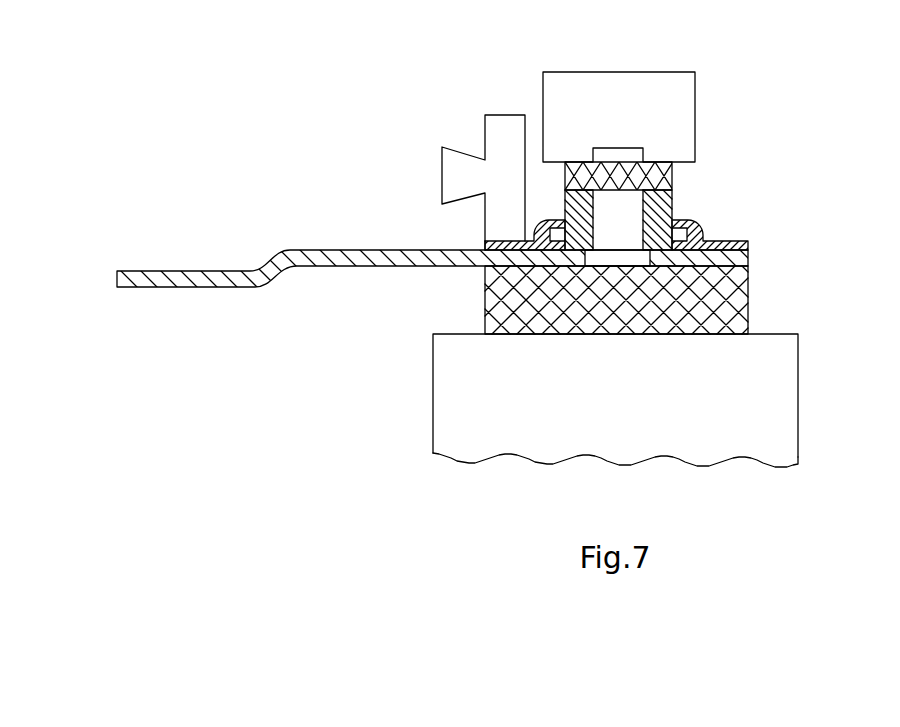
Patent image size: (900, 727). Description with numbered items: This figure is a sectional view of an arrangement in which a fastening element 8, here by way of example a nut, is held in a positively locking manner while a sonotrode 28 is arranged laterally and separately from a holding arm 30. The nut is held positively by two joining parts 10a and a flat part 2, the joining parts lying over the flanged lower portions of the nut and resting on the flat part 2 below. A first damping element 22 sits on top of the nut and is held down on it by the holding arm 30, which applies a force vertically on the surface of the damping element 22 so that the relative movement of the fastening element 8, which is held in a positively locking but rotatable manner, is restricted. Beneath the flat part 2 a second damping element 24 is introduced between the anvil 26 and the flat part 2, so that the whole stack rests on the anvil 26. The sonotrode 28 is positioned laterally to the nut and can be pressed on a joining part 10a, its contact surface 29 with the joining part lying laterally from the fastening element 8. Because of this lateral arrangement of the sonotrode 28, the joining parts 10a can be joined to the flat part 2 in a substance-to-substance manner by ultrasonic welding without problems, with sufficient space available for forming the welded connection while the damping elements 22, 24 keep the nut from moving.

The flat part 2 is at (338, 248).
The fastening element 8 is at (660, 207).
The joining part 10a is at (734, 240).
The first damping element 22 is at (662, 178).
The second damping element 24 is at (733, 306).
The anvil 26 is at (782, 388).
The sonotrode 28 is at (500, 132).
The contact surface 29 is at (486, 247).
The holding arm 30 is at (593, 83).